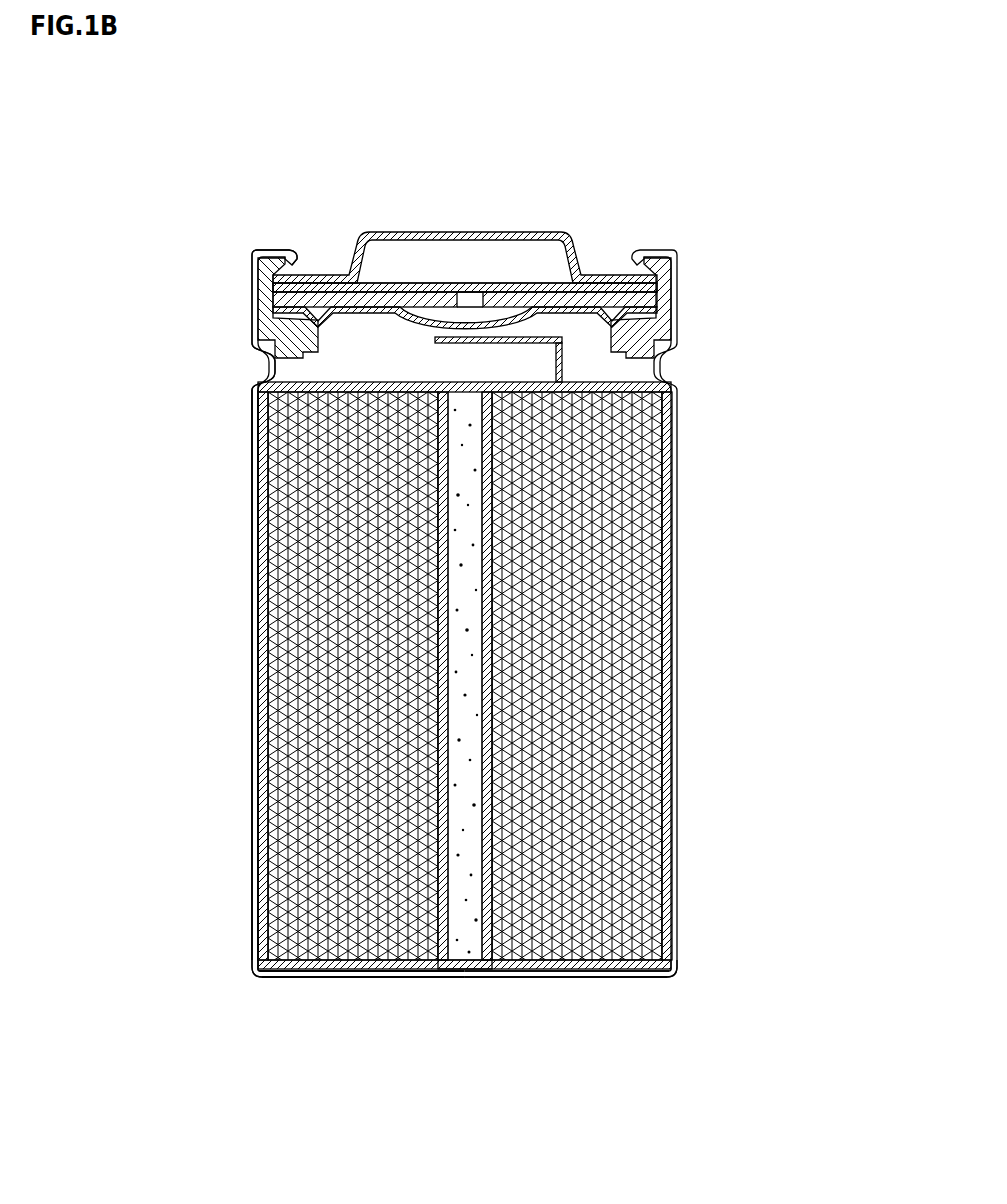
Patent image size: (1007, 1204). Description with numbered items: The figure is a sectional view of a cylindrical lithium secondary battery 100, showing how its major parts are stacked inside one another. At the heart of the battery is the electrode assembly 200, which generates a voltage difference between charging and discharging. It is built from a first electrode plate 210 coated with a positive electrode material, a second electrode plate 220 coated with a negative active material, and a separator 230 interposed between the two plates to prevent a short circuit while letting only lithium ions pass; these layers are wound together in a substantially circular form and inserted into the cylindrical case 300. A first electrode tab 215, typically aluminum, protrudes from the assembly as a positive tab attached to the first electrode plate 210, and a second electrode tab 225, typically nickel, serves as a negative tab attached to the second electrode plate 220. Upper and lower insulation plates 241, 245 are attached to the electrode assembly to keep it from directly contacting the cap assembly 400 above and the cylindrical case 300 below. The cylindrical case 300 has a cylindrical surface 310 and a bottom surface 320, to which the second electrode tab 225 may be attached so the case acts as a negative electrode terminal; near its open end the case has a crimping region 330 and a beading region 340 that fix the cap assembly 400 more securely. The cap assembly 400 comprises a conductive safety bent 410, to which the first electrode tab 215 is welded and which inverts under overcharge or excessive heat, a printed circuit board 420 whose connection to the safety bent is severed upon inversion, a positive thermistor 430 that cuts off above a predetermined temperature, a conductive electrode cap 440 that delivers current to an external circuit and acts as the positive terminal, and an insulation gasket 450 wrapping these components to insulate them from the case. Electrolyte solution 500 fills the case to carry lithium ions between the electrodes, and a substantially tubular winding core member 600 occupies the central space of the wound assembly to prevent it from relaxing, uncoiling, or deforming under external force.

The cylindrical lithium secondary battery 100 is at (720, 204).
The electrode assembly 200 is at (807, 363).
The first electrode plate 210 is at (643, 528).
The first electrode tab 215 is at (657, 362).
The second electrode plate 220 is at (678, 437).
The second electrode tab 225 is at (557, 980).
The separator 230 is at (662, 493).
The upper insulation plate 241 is at (672, 381).
The lower insulation plate 245 is at (645, 982).
The cylindrical case 300 is at (120, 333).
The cylindrical surface 310 is at (253, 432).
The bottom surface 320 is at (283, 981).
The crimping region 330 is at (253, 252).
The beading region 340 is at (273, 361).
The cap assembly 400 is at (373, 139).
The conductive safety bent 410 is at (437, 332).
The printed circuit board 420 is at (500, 303).
The positive thermistor 430 is at (549, 287).
The conductive electrode cap 440 is at (377, 231).
The insulation gasket 450 is at (650, 243).
The electrolyte solution 500 is at (451, 960).
The winding core member 600 is at (500, 970).